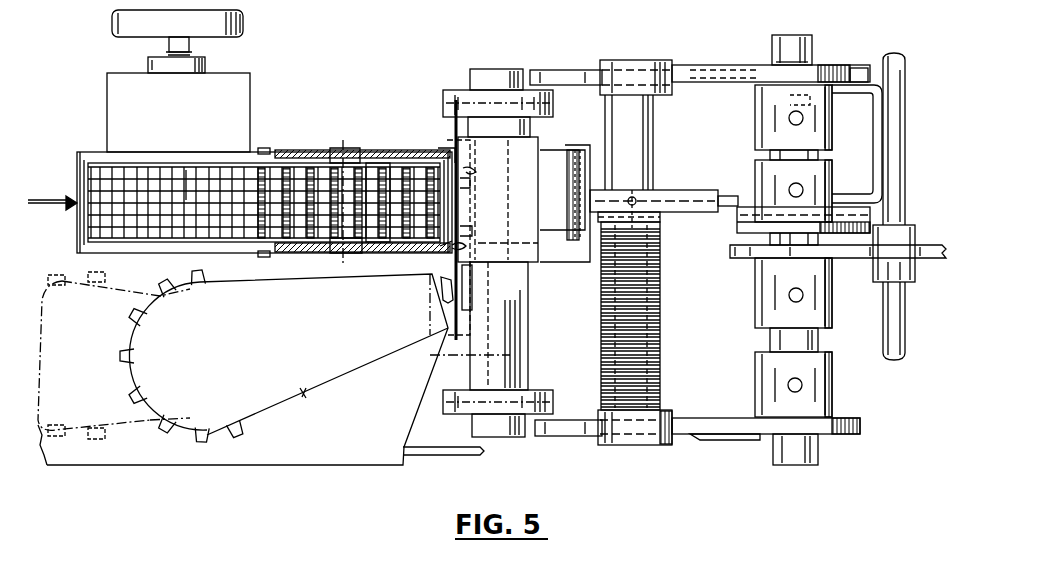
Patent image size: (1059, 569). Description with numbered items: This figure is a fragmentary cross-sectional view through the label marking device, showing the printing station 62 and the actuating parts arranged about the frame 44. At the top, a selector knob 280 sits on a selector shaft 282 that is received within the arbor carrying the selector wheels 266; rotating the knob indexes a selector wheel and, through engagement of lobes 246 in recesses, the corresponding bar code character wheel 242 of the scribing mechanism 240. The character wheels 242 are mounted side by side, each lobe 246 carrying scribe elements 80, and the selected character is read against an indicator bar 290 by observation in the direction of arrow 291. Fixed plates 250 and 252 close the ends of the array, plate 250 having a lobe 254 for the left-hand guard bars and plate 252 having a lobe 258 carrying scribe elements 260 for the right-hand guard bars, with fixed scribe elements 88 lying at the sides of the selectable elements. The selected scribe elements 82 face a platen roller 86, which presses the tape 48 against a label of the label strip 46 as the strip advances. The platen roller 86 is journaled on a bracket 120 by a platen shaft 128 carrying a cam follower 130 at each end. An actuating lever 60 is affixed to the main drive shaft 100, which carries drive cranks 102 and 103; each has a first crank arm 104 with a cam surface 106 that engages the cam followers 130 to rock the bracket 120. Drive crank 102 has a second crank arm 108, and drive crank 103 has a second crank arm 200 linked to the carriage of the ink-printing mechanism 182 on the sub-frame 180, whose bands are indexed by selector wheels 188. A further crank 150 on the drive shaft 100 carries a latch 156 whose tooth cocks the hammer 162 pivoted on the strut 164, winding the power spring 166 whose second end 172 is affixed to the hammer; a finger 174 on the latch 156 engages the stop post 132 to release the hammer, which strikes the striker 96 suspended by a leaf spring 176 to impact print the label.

The selector knob 280 is at (243, 12).
The selector shaft 282 is at (206, 60).
The scribing mechanism 240 is at (260, 150).
The selector wheels 266 is at (186, 170).
The indicator bar 290 is at (77, 226).
The arrow 291 is at (50, 190).
The bar code character wheels 242 is at (298, 165).
The lobes 246 is at (355, 138).
The fixed plate 250 is at (344, 138).
The scribe elements 80 is at (378, 162).
The lobe 254 is at (446, 150).
The fixed plate 252 is at (350, 246).
The selected scribe elements 82 is at (463, 213).
The fixed scribe elements 88 is at (476, 171).
The lobe 258 is at (470, 182).
The scribe elements 260 is at (463, 231).
The platen roller 86 is at (521, 199).
The striker 96 is at (556, 240).
The leaf spring 176 is at (588, 136).
The printing station 62 is at (518, 290).
The label strip 46 is at (464, 278).
The tape 48 is at (440, 277).
The cam followers 130 is at (447, 90).
The platen shaft 128 is at (497, 68).
The bracket 120 is at (455, 95).
The cam surface 106 is at (540, 70).
The first crank arm 104 is at (604, 60).
The strut 164 is at (653, 105).
The hammer 162 is at (663, 190).
The latch 156 is at (738, 172).
The second end 172 is at (662, 218).
The power spring 166 is at (660, 290).
The second crank arm 108 is at (710, 64).
The second crank arm 200 is at (770, 436).
The drive crank 102 is at (802, 66).
The main drive shaft 100 is at (820, 338).
The drive crank 103 is at (818, 447).
The finger 174 is at (836, 95).
The further crank 150 is at (842, 222).
The actuating lever 60 is at (846, 258).
The stop post 132 is at (905, 300).
The selector wheels 188 is at (196, 443).
The sub-frame 180 is at (243, 468).
The ink-printing mechanism 182 is at (305, 393).
The frame 44 is at (412, 456).